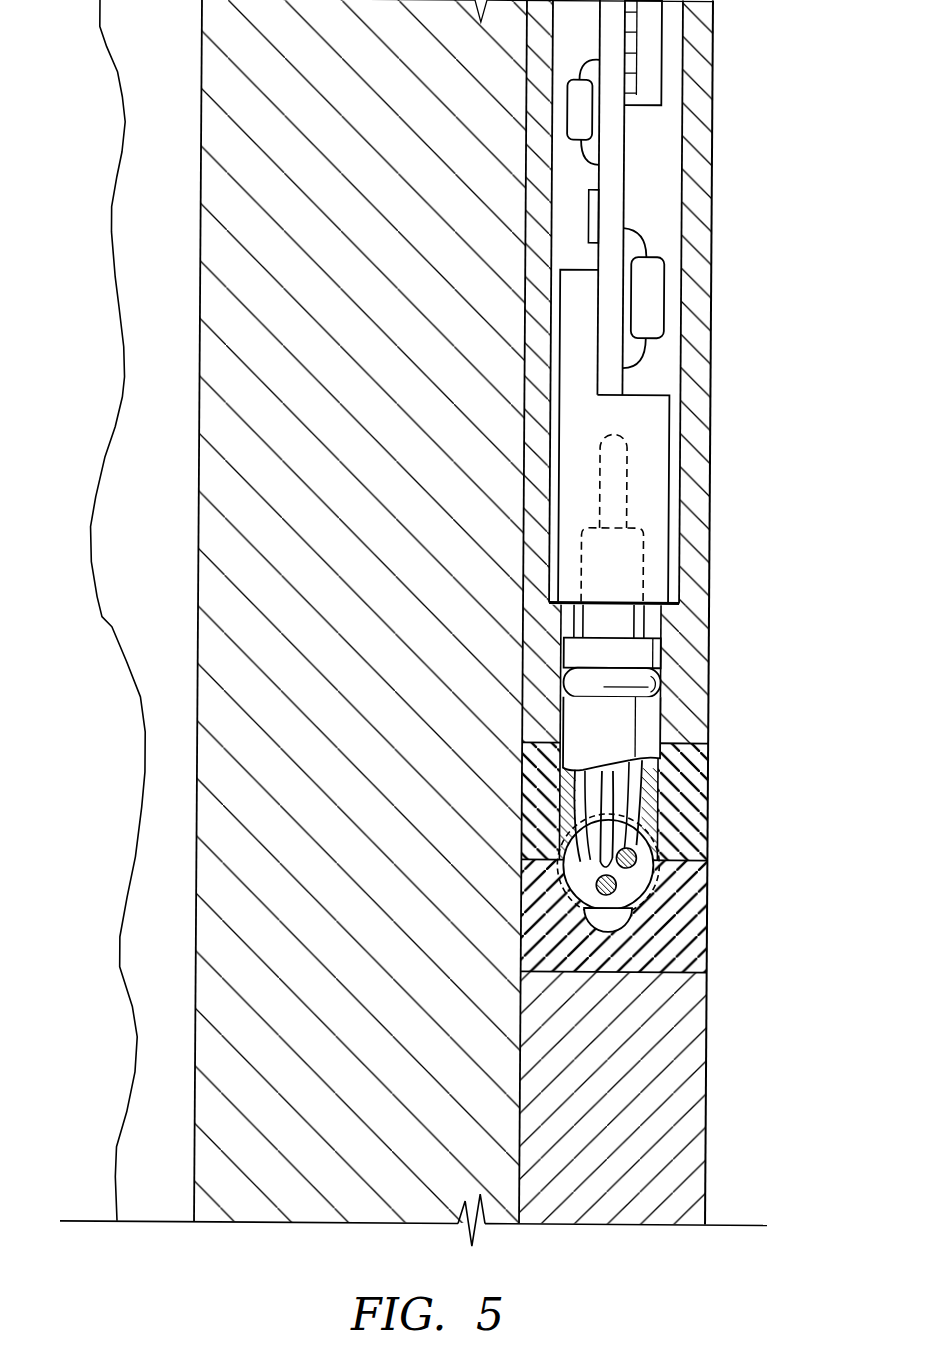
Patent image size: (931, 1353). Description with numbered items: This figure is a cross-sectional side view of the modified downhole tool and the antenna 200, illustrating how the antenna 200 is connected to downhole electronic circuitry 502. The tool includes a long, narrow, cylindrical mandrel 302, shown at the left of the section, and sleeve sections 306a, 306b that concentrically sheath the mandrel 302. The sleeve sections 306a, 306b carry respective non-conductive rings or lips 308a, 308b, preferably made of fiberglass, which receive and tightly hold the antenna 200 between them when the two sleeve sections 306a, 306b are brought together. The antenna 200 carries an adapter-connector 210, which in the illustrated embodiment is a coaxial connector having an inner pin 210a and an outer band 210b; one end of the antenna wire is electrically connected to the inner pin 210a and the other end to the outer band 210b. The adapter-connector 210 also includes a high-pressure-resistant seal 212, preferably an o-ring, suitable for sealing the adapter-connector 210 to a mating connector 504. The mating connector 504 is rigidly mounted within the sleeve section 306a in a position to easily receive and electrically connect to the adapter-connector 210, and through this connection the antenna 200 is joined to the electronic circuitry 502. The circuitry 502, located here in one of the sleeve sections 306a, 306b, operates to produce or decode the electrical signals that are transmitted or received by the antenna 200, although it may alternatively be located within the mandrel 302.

The mandrel 302 is at (203, 500).
The sleeve section 306a is at (730, 117).
The sleeve section 306b is at (730, 1110).
The non-conductive ring or lip 308a is at (710, 784).
The non-conductive ring or lip 308b is at (710, 955).
The downhole electronic circuitry 502 is at (626, 201).
The mating connector 504 is at (660, 452).
The inner pin 210a is at (633, 491).
The outer band 210b is at (651, 568).
The high-pressure-resistant seal 212 is at (668, 684).
The adapter-connector 210 is at (670, 814).
The antenna 200 is at (665, 890).